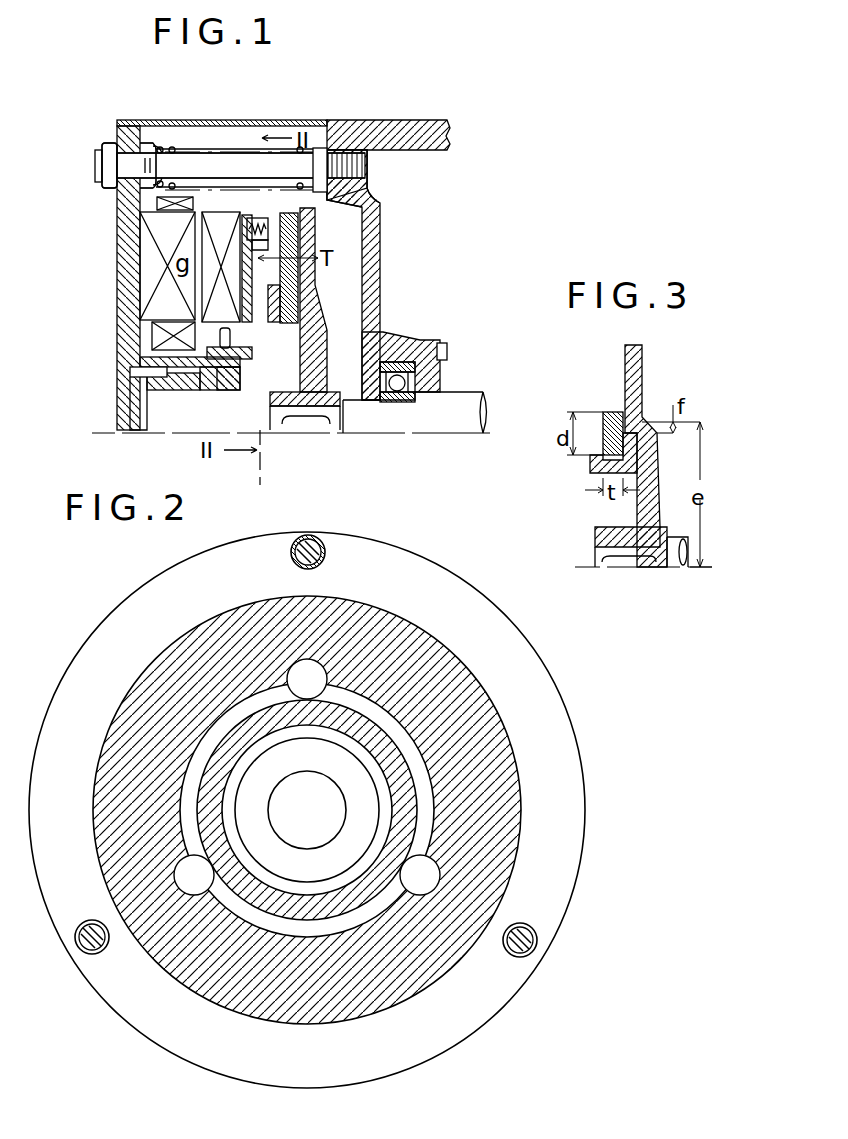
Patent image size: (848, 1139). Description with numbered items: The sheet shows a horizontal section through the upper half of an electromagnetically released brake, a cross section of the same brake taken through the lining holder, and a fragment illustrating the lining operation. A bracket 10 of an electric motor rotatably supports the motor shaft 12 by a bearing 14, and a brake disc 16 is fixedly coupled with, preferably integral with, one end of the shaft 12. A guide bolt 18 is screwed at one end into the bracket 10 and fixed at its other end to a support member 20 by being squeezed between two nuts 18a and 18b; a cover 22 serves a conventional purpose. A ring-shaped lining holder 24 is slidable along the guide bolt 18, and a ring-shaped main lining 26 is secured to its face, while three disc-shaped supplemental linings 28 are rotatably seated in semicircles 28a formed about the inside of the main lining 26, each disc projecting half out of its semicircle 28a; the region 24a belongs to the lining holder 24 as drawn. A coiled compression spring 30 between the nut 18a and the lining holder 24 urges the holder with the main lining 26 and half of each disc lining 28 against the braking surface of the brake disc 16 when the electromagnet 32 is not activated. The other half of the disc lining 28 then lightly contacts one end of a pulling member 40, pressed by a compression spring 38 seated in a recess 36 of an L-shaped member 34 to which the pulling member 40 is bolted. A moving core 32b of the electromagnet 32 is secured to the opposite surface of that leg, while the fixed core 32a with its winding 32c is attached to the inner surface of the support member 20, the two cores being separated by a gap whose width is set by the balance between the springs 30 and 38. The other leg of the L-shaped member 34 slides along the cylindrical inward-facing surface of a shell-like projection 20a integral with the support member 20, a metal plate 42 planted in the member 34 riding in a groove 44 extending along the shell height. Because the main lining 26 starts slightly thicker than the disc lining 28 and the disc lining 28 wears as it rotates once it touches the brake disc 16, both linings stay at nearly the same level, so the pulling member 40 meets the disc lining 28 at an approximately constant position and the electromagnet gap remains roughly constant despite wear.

In FIG. 1, the bracket 10 is at (380, 222).
In FIG. 1, the shaft 12 is at (390, 412).
In FIG. 3, the shaft 12 is at (666, 570).
In FIG. 1, the bearing 14 is at (400, 360).
In FIG. 1, the brake disc 16 is at (310, 250).
In FIG. 3, the brake disc 16 is at (632, 375).
In FIG. 1, the guide bolt 18 is at (190, 160).
In FIG. 2, the guide bolt 18 is at (324, 545).
In FIG. 1, the nut 18a is at (150, 150).
In FIG. 1, the nut 18b is at (108, 148).
In FIG. 1, the support member 20 is at (118, 292).
In FIG. 1, the shell like projection 20a is at (188, 388).
In FIG. 1, the cover 22 is at (312, 118).
In FIG. 1, the lining holder 24 is at (362, 192).
In FIG. 2, the lining holder 24 is at (125, 618).
In FIG. 2, the flange portion 24a is at (300, 548).
In FIG. 1, the main lining 26 is at (310, 230).
In FIG. 1, the supplemental lining 28 is at (298, 296).
In FIG. 3, the supplemental lining 28 is at (612, 412).
In FIG. 2, the semicircles 28a is at (432, 873).
In FIG. 1, the coiled compression spring 30 is at (168, 148).
In FIG. 1, the electromagnet 32 is at (185, 338).
In FIG. 1, the core 32a is at (150, 250).
In FIG. 1, the moving core 32b is at (224, 215).
In FIG. 1, the winding 32c is at (160, 203).
In FIG. 1, the L-shaped member 34 is at (230, 380).
In FIG. 1, the recess 36 is at (268, 228).
In FIG. 1, the compression spring 38 is at (295, 160).
In FIG. 1, the pulling member 40 is at (305, 400).
In FIG. 3, the pulling member 40 is at (598, 470).
In FIG. 1, the metal plate 42 is at (162, 395).
In FIG. 1, the groove 44 is at (140, 380).